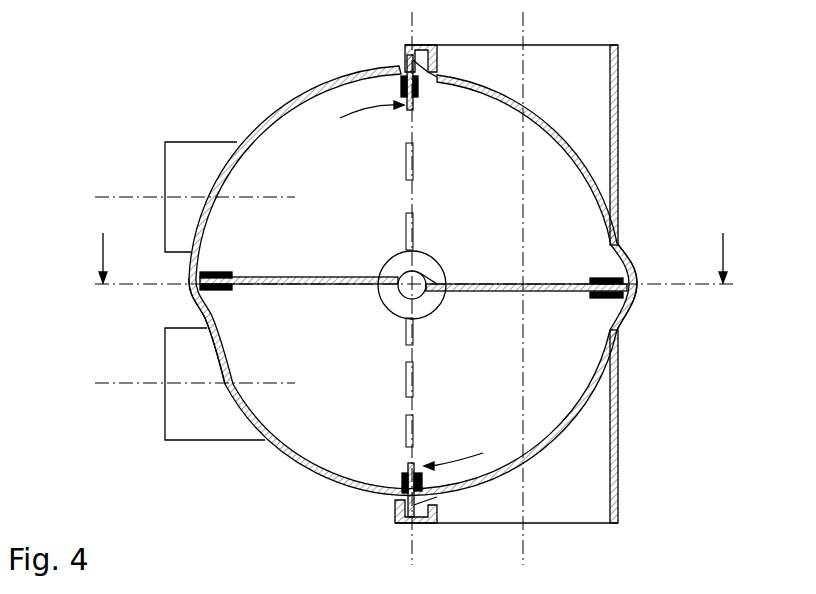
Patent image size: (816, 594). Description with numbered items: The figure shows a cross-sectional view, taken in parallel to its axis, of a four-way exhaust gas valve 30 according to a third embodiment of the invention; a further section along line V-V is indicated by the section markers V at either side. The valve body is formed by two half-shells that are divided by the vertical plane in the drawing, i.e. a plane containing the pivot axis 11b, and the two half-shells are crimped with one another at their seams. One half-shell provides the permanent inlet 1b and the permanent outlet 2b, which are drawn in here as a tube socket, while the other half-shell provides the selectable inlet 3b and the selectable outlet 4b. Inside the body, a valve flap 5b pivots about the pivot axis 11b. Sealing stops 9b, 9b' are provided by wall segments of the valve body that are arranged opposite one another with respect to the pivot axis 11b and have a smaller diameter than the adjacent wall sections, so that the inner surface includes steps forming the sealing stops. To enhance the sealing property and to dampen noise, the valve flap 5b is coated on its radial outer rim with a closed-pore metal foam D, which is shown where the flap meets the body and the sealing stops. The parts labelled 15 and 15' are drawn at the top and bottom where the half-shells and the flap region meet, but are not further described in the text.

The permanent inlet 1b is at (618, 108).
The permanent outlet 2b is at (618, 462).
The selectable inlet 3b is at (183, 142).
The selectable outlet 4b is at (190, 440).
The valve flap 5b is at (557, 293).
The sealing stop 9b is at (413, 308).
The sealing stop 9b' is at (419, 286).
The pivot axis 11b is at (397, 285).
The upper fastening element 15 is at (396, 49).
The lower fastening element 15' is at (391, 520).
The four-way exhaust gas valve 30 is at (262, 86).
The closed-pore metal foam D is at (420, 92).
The section line V- V is at (414, 255).